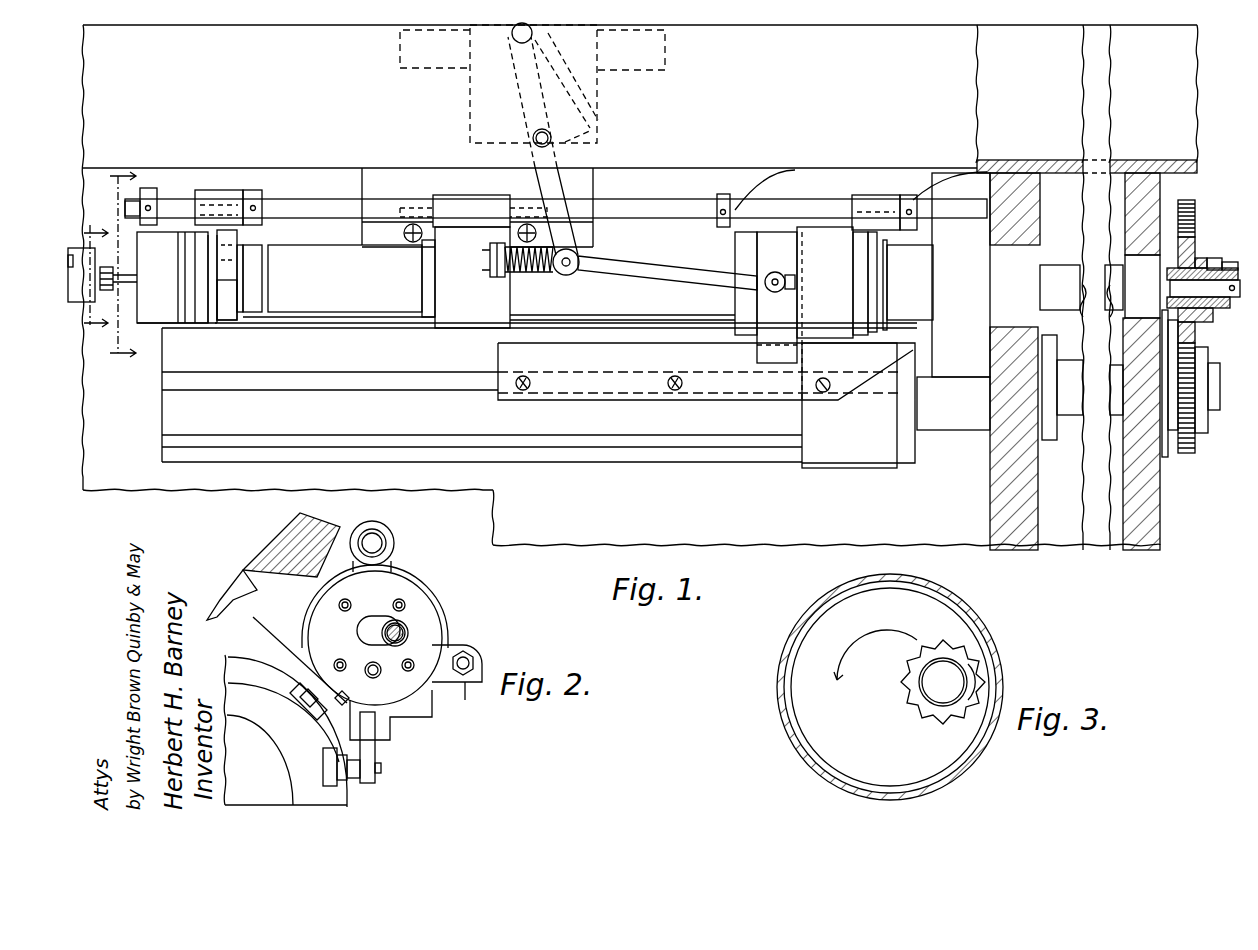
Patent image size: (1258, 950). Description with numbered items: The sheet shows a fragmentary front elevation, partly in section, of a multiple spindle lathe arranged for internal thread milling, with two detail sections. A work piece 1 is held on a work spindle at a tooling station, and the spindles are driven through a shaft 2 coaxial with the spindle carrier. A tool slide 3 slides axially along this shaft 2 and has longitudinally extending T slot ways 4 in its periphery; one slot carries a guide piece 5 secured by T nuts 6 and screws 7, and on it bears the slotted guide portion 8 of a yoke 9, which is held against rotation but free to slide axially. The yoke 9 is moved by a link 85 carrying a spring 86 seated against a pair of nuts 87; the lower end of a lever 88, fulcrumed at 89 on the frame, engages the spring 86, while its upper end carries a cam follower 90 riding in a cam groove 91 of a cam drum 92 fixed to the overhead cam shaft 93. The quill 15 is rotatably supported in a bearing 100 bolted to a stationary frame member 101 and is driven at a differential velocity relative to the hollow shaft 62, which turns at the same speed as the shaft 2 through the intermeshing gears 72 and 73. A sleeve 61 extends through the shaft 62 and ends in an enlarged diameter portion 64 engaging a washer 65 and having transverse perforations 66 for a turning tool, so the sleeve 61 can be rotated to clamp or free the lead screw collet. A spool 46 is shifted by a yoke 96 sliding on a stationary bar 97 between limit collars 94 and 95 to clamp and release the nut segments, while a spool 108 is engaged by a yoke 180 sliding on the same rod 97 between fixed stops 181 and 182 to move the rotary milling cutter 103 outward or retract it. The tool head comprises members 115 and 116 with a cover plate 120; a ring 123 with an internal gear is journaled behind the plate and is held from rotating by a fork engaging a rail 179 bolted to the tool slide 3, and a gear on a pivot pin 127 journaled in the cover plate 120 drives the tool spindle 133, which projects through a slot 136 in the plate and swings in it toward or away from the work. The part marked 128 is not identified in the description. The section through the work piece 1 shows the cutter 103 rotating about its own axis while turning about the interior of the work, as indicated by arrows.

In FIG. 1, the work piece 1 is at (77, 305).
In FIG. 3, the work piece 1 is at (766, 655).
In FIG. 1, the shaft 2 is at (123, 259).
In FIG. 1, the tool slide 3 is at (522, 470).
In FIG. 2, the tool slide 3 is at (350, 805).
In FIG. 1, the T slot ways 4 is at (180, 433).
In FIG. 2, the T slot ways 4 is at (340, 745).
In FIG. 1, the guide piece 5 is at (598, 398).
In FIG. 2, the guide piece 5 is at (376, 752).
In FIG. 2, the T nuts 6 is at (325, 785).
In FIG. 1, the screws 7 is at (525, 377).
In FIG. 2, the screws 7 is at (382, 769).
In FIG. 2, the slotted guide portion 8 is at (428, 712).
In FIG. 1, the yoke 9 is at (785, 328).
In FIG. 1, the quill 15 is at (314, 258).
In FIG. 1, the spool 46 is at (885, 300).
In FIG. 1, the sleeve 61 is at (1168, 288).
In FIG. 1, the hollow shaft 62 is at (1175, 260).
In FIG. 1, the enlarged diameter portion 64 is at (1222, 308).
In FIG. 1, the washer 65 is at (1212, 256).
In FIG. 1, the transverse perforations 66 is at (1232, 262).
In FIG. 1, the gear 72 is at (1183, 455).
In FIG. 1, the gear 73 is at (1192, 235).
In FIG. 1, the link 85 is at (675, 282).
In FIG. 2, the link 85 is at (474, 698).
In FIG. 1, the spring 86 is at (536, 276).
In FIG. 1, the nuts 87 is at (492, 258).
In FIG. 2, the nuts 87 is at (472, 655).
In FIG. 1, the lever 88 is at (570, 185).
In FIG. 1, the fulcrum 89 is at (533, 138).
In FIG. 1, the cam follower 90 is at (512, 33).
In FIG. 1, the cam groove 91 is at (566, 87).
In FIG. 1, the cam drum 92 is at (598, 108).
In FIG. 1, the overhead cam shaft 93 is at (665, 60).
In FIG. 1, the limit collar 94 is at (727, 192).
In FIG. 1, the limit collar 95 is at (912, 198).
In FIG. 1, the yoke 96 is at (875, 200).
In FIG. 1, the stationary bar 97 is at (668, 200).
In FIG. 2, the stationary bar 97 is at (387, 543).
In FIG. 1, the bearing 100 is at (456, 322).
In FIG. 1, the stationary frame member 101 is at (437, 178).
In FIG. 2, the stationary frame member 101 is at (262, 607).
In FIG. 1, the rotary milling cutter 103 is at (116, 267).
In FIG. 3, the rotary milling cutter 103 is at (925, 708).
In FIG. 1, the spool 108 is at (248, 305).
In FIG. 1, the member 115 is at (232, 320).
In FIG. 1, the member 116 is at (200, 326).
In FIG. 1, the cover plate 120 is at (139, 324).
In FIG. 2, the cover plate 120 is at (430, 605).
In FIG. 1, the ring 123 is at (180, 324).
In FIG. 2, the pivot pin 127 is at (373, 672).
In FIG. 2, the holes 128 is at (335, 668).
In FIG. 1, the tool spindle 133 is at (140, 275).
In FIG. 2, the tool spindle 133 is at (405, 632).
In FIG. 3, the tool spindle 133 is at (955, 672).
In FIG. 2, the slot 136 is at (372, 618).
In FIG. 2, the rail 179 is at (300, 690).
In FIG. 1, the yoke 180 is at (222, 210).
In FIG. 2, the yoke 180 is at (415, 580).
In FIG. 1, the stop 181 is at (150, 188).
In FIG. 2, the stop 181 is at (380, 528).
In FIG. 1, the stop 182 is at (258, 190).